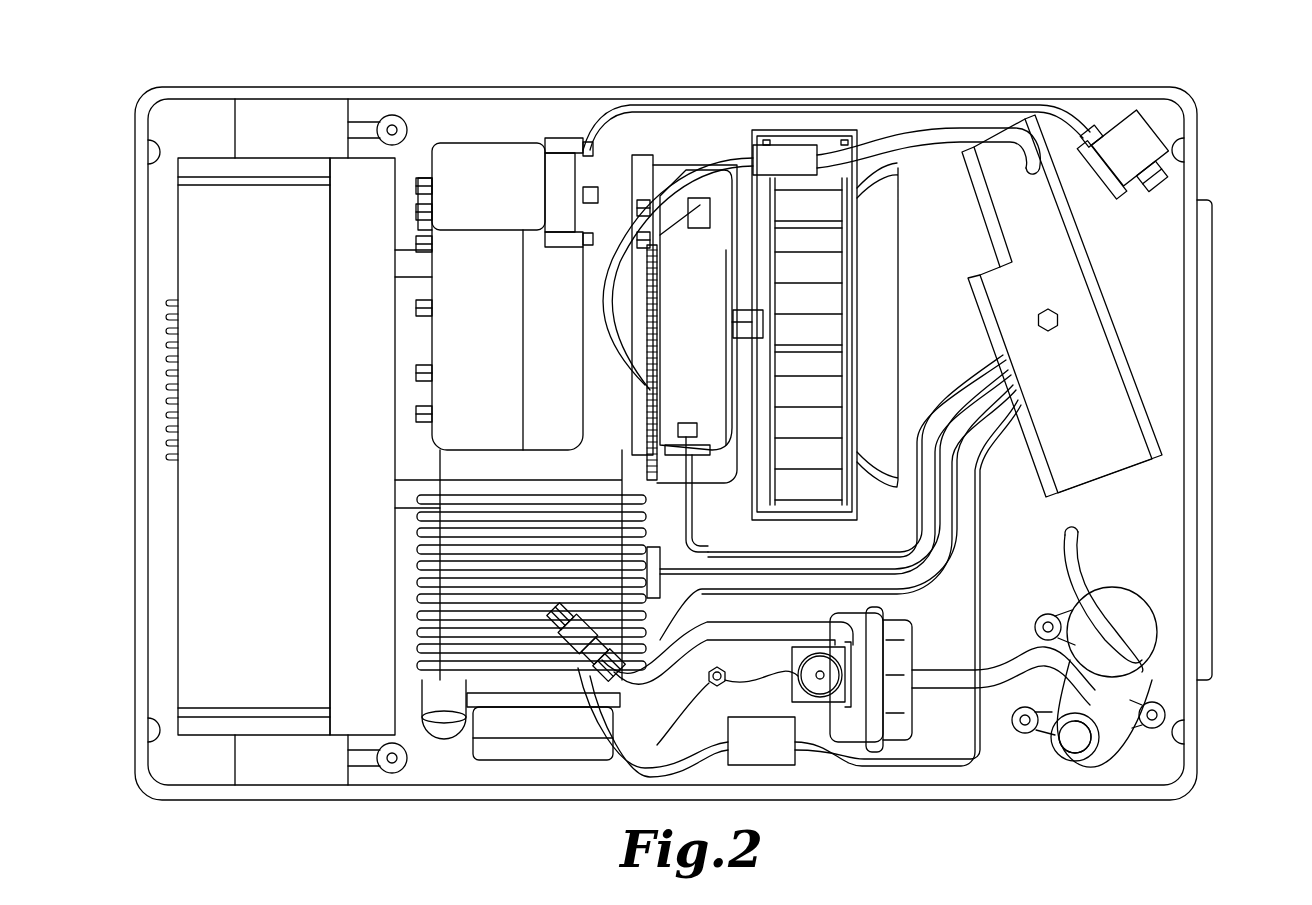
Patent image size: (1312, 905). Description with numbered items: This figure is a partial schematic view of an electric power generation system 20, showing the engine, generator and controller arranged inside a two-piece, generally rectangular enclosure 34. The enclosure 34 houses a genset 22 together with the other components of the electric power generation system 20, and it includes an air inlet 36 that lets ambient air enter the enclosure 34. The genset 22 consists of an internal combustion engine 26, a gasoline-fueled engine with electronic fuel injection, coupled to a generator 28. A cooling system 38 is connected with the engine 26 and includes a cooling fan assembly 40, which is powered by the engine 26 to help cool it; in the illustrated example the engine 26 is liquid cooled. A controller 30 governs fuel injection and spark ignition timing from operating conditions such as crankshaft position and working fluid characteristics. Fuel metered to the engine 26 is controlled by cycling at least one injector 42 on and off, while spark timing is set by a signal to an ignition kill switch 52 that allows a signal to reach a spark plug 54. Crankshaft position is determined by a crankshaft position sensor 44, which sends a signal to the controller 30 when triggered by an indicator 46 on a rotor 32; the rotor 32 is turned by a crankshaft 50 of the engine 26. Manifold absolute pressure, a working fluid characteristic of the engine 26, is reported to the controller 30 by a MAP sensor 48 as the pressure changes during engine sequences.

The electric power generation system 20 is at (175, 66).
The genset 22 is at (686, 128).
The internal combustion engine 26 is at (426, 340).
The generator 28 is at (676, 165).
The controller 30 is at (1066, 275).
The rotor 32 is at (703, 311).
The enclosure 34 is at (290, 801).
The air inlet 36 is at (1213, 297).
The cooling system 38 is at (830, 150).
The cooling fan assembly 40 is at (815, 222).
The injector 42 is at (596, 688).
The crankshaft position sensor 44 is at (705, 456).
The indicator 46 is at (683, 440).
The MAP sensor 48 is at (684, 560).
The crankshaft 50 is at (738, 345).
The ignition kill switch 52 is at (790, 767).
The spark plug 54 is at (550, 660).